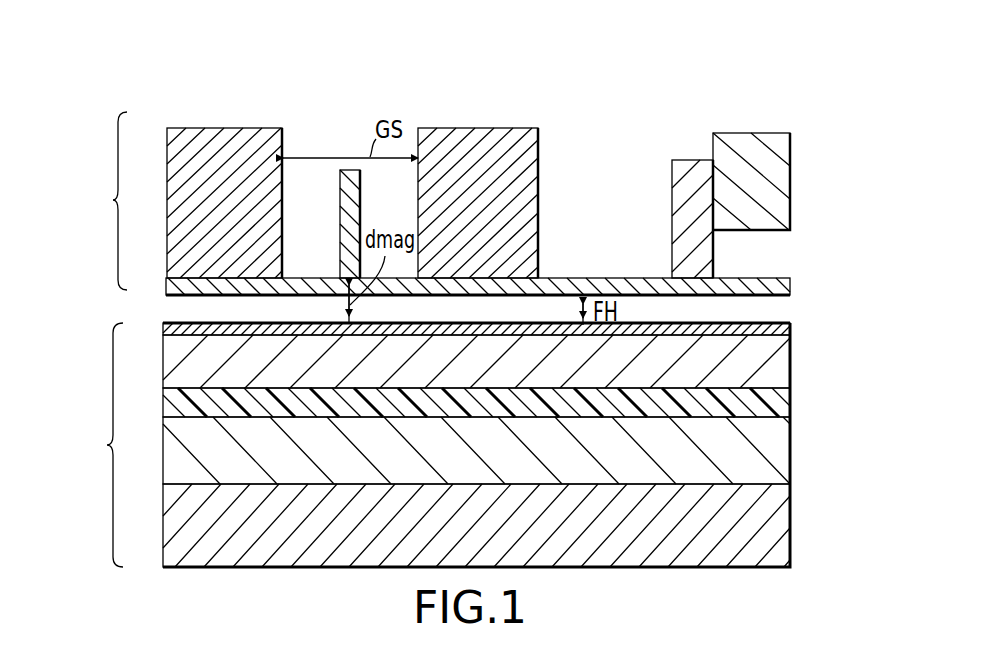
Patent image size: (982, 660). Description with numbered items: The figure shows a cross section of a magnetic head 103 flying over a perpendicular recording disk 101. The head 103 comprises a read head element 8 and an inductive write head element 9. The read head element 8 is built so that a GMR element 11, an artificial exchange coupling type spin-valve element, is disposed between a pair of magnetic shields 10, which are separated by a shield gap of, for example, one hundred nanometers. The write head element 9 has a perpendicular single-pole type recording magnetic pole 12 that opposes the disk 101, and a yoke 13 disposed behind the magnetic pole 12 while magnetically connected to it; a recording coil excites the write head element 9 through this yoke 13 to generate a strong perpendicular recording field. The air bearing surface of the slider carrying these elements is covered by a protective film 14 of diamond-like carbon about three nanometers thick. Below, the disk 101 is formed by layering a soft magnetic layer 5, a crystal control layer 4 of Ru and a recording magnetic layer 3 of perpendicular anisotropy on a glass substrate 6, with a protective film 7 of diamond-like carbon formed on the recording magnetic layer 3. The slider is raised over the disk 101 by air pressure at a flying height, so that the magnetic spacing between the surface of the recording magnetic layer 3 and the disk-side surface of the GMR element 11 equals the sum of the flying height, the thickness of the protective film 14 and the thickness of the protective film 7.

The disk 101 is at (95, 445).
The magnetic head 103 is at (98, 201).
The recording magnetic layer 3 is at (163, 362).
The crystal control layer 4 is at (163, 402).
The soft magnetic layer 5 is at (163, 452).
The substrate 6 is at (163, 513).
The protective film 7 is at (163, 330).
The read head element 8 is at (335, 130).
The write head element 9 is at (672, 135).
The magnetic shields 10 is at (215, 128).
The GMR element 11 is at (340, 225).
The recording magnetic pole 12 is at (672, 215).
The yoke 13 is at (757, 133).
The protective film 14 is at (167, 280).